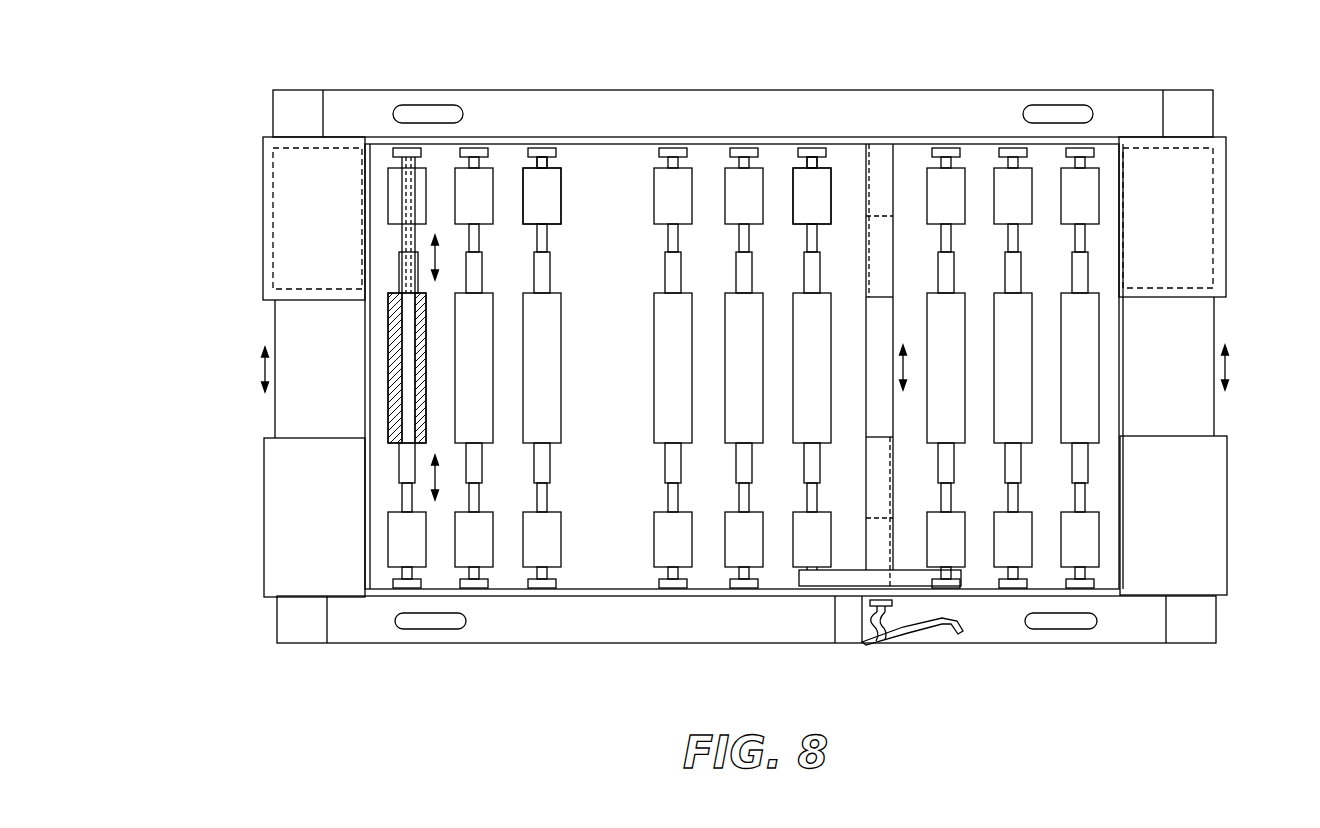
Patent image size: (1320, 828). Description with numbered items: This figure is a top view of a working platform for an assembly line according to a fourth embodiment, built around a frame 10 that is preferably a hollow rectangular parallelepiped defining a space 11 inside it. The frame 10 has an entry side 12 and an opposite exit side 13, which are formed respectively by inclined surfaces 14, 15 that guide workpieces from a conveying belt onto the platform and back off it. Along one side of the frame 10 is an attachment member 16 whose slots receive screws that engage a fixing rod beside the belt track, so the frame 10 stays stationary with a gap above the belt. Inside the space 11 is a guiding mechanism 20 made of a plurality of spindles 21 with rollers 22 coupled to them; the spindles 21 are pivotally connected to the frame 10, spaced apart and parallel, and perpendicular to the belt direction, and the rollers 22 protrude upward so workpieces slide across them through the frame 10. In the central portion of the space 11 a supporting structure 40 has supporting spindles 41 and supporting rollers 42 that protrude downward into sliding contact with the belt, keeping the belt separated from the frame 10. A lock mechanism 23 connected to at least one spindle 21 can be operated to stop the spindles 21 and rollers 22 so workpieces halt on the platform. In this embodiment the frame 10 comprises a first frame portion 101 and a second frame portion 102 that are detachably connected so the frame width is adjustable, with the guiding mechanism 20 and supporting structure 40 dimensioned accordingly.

The frame 10 is at (1210, 662).
The space 11 is at (618, 578).
The entry side 12 is at (265, 478).
The exit side 13 is at (1228, 474).
The inclined surface 14 is at (296, 508).
The inclined surface 15 is at (1195, 508).
The attachment member 16 is at (645, 630).
The guiding mechanism 20 is at (535, 320).
The spindle 21 is at (543, 160).
The roller 22 is at (528, 182).
The lock mechanism 23 is at (917, 645).
The supporting structure 40 is at (751, 311).
The supporting spindle 41 is at (745, 160).
The supporting roller 42 is at (730, 182).
The first frame portion 101 is at (1040, 592).
The second frame portion 102 is at (1043, 143).